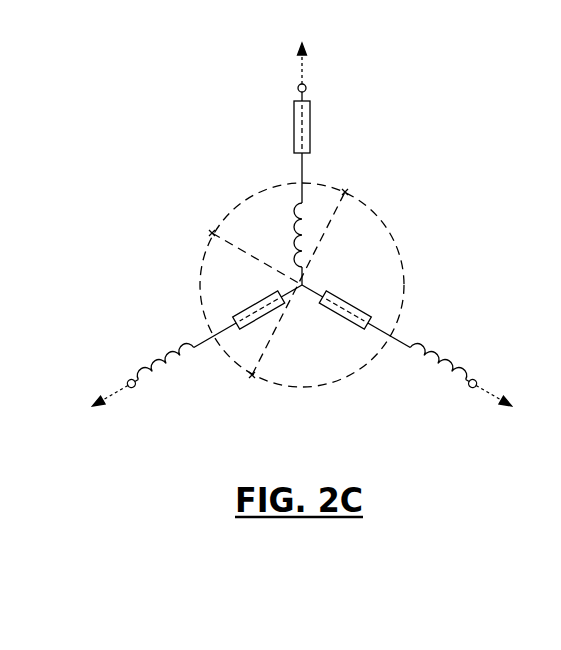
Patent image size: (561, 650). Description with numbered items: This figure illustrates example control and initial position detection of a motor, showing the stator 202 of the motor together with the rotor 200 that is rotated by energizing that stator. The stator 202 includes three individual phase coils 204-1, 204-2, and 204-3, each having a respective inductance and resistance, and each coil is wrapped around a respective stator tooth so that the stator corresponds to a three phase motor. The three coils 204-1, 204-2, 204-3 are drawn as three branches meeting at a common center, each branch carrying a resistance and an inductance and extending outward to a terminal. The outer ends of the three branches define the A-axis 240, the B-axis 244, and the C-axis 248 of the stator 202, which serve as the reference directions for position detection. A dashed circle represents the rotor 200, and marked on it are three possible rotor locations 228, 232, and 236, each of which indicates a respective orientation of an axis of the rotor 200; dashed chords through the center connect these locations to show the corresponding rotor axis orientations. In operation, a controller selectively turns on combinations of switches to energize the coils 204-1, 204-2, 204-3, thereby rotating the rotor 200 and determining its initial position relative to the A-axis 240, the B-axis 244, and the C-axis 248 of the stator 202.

The rotor 200 is at (353, 378).
The stator 202 is at (323, 235).
The phase coil 204-1 is at (262, 184).
The phase coil 204-2 is at (190, 307).
The phase coil 204-3 is at (416, 309).
The rotor location 228 is at (347, 191).
The rotor location 232 is at (252, 377).
The rotor location 236 is at (212, 233).
The A-axis 240 is at (305, 70).
The B-axis 244 is at (118, 389).
The C-axis 248 is at (492, 392).